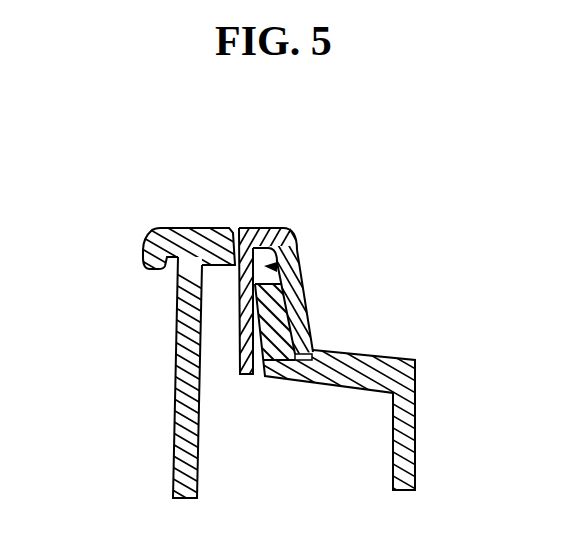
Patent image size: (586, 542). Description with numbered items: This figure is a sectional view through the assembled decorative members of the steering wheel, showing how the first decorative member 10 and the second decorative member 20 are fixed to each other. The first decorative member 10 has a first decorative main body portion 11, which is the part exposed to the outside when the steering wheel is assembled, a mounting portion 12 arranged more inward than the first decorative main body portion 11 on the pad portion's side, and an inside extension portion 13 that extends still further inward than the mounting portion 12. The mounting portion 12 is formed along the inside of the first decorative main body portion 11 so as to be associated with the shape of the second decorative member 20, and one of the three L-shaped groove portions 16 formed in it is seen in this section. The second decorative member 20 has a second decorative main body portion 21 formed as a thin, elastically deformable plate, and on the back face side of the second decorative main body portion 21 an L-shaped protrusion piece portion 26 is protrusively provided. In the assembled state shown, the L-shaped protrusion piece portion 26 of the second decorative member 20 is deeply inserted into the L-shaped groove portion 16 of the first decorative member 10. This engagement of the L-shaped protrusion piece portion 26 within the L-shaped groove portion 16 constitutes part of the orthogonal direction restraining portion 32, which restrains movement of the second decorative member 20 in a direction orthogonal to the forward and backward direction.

The first decorative member 10 is at (154, 325).
The first decorative main body portion 11 is at (183, 229).
The mounting portion 12 is at (280, 384).
The inside extension portion 13 is at (363, 375).
The second decorative member 20 is at (338, 284).
The second decorative main body portion 21 is at (260, 230).
The L-shaped groove portion 16 is at (290, 258).
The L-shaped protrusion piece portion 26 is at (248, 300).
The orthogonal direction restraining portion 32 is at (338, 284).